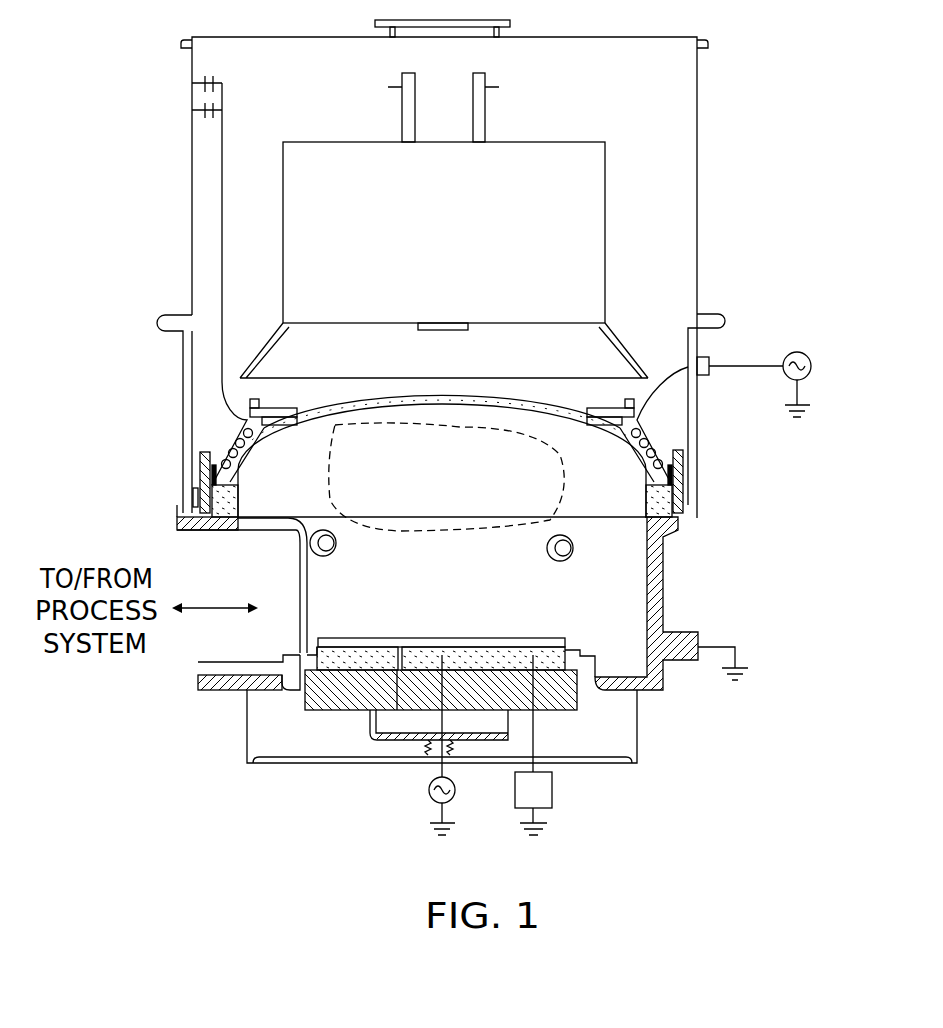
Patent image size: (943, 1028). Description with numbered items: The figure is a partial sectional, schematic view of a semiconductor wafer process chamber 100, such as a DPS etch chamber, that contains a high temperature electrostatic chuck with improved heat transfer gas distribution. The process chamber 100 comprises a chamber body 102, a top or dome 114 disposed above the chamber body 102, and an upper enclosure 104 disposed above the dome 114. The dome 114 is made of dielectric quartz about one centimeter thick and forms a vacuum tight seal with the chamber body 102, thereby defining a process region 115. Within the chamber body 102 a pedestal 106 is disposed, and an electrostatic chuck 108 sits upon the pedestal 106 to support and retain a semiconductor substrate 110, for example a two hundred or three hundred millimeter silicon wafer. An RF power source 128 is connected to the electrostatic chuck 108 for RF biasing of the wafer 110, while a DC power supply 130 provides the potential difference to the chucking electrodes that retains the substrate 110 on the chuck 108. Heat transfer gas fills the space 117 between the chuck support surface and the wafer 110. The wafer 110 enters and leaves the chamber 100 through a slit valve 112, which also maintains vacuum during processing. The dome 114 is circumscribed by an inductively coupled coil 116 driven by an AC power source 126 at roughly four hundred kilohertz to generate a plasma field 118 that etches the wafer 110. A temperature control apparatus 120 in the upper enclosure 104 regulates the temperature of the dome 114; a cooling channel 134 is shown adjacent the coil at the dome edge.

The process chamber 100 is at (733, 176).
The chamber body 102 is at (663, 605).
The upper enclosure 104 is at (186, 121).
The pedestal 106 is at (617, 713).
The electrostatic chuck 108 is at (562, 655).
The semiconductor substrate 110 is at (462, 638).
The slit valve 112 is at (300, 572).
The dome 114 is at (663, 480).
The process region 115 is at (257, 483).
The inductively coupled coil 116 is at (250, 430).
The space 117 is at (350, 638).
The plasma field 118 is at (462, 489).
The temperature control apparatus 120 is at (568, 152).
The AC power source 126 is at (812, 360).
The RF power source 128 is at (427, 794).
The DC power supply 130 is at (552, 790).
The cooling channel 134 is at (276, 410).